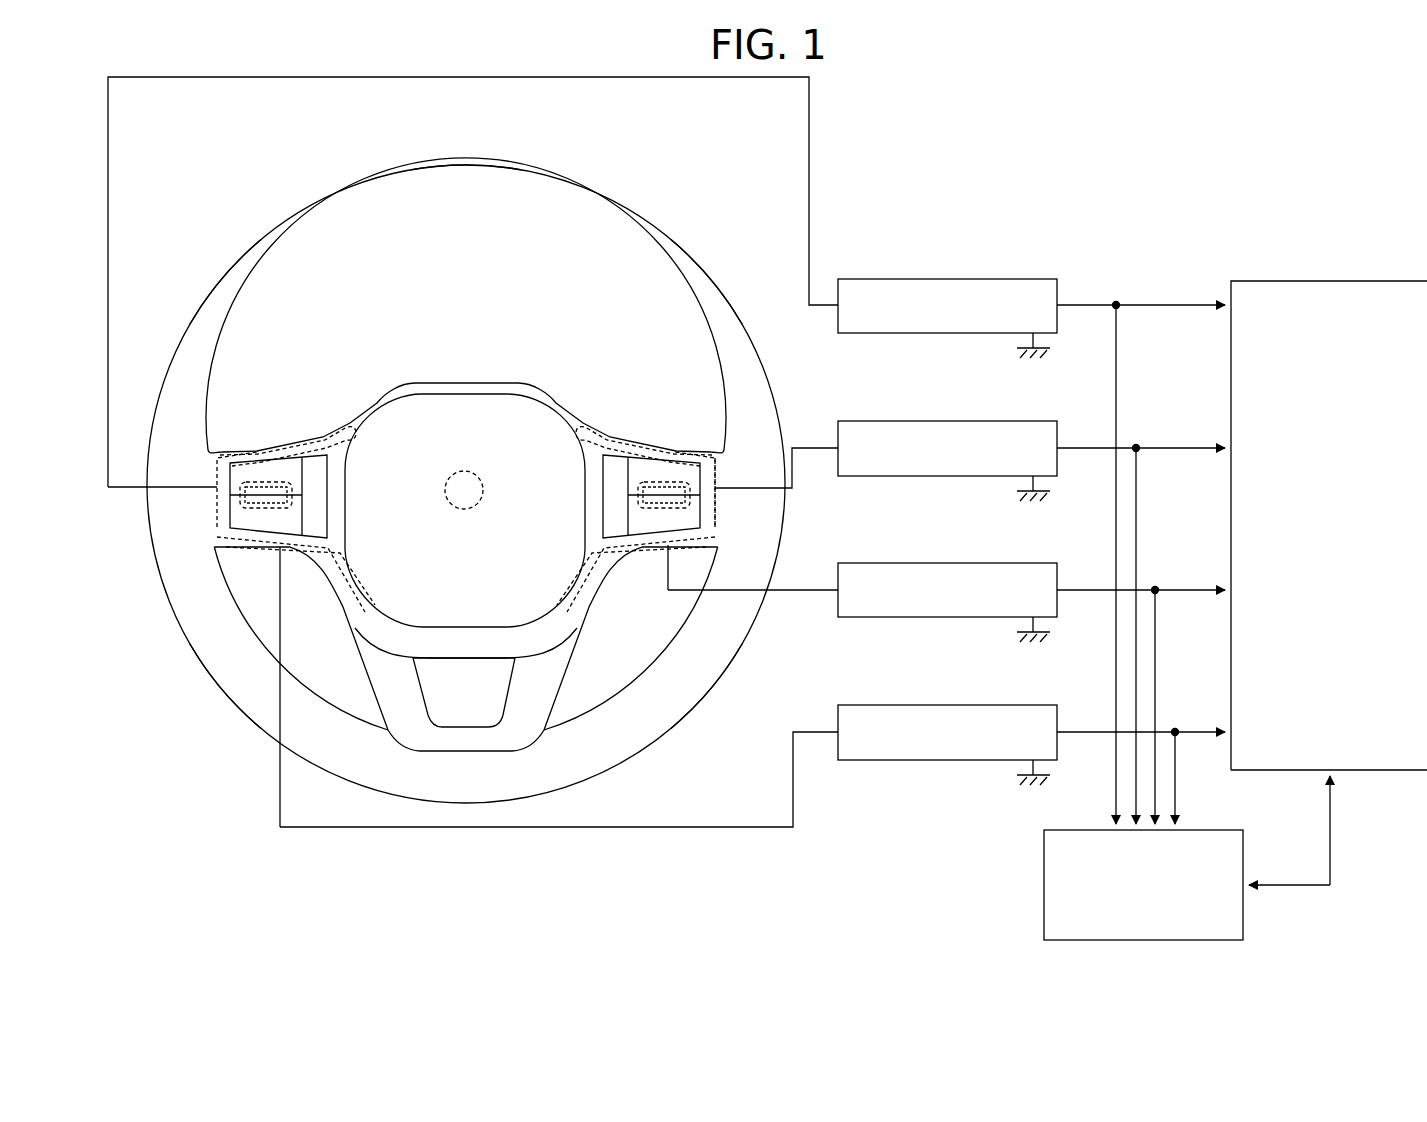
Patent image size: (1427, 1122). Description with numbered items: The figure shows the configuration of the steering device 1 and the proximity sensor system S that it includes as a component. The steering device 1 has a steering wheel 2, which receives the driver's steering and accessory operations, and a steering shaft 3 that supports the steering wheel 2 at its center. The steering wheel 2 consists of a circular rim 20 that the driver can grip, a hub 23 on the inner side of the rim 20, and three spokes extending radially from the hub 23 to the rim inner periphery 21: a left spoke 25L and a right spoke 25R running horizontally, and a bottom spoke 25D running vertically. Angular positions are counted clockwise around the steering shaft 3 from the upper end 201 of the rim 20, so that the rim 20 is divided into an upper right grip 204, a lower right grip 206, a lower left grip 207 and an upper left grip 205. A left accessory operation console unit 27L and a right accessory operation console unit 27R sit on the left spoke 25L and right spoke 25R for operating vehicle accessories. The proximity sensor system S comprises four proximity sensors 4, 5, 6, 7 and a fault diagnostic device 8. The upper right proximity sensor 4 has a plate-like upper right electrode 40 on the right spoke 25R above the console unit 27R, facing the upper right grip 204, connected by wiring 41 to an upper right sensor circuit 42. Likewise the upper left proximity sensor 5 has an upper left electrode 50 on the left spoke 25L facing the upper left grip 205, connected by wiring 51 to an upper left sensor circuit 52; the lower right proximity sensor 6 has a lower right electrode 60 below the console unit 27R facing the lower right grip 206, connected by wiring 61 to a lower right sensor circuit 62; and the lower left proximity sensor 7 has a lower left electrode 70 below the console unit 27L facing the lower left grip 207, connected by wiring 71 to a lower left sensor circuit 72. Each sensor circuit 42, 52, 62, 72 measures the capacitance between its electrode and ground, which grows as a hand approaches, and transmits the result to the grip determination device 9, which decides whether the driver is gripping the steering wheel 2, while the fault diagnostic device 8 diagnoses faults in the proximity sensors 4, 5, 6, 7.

The steering device 1 is at (1376, 120).
The proximity sensor system S is at (1227, 172).
The steering wheel 2 is at (588, 148).
The rim 20 is at (376, 181).
The upper end of the rim 201 is at (465, 169).
The upper right grip 204 is at (740, 283).
The upper left grip 205 is at (208, 300).
The lower right grip 206 is at (702, 708).
The lower left grip 207 is at (236, 718).
The rim inner periphery 21 is at (252, 352).
The hub 23 is at (404, 385).
The steering shaft 3 is at (463, 471).
The left spoke 25L is at (333, 437).
The right spoke 25R is at (604, 438).
The bottom spoke 25D is at (556, 654).
The left accessory operation console unit 27L is at (268, 460).
The right accessory operation console unit 27R is at (660, 460).
The upper right proximity sensor 4 is at (1074, 390).
The upper left proximity sensor 5 is at (1074, 250).
The lower right proximity sensor 6 is at (1074, 535).
The lower left proximity sensor 7 is at (1074, 675).
The upper right electrode 40 is at (718, 504).
The wiring 41 is at (806, 440).
The upper right sensor circuit 42 is at (955, 422).
The upper left electrode 50 is at (217, 507).
The wiring 51 is at (811, 183).
The upper left sensor circuit 52 is at (955, 280).
The lower right electrode 60 is at (640, 556).
The wiring 61 is at (808, 590).
The lower right sensor circuit 62 is at (955, 564).
The lower left electrode 70 is at (318, 562).
The wiring 71 is at (808, 732).
The lower left sensor circuit 72 is at (955, 706).
The fault diagnostic device 8 is at (1210, 830).
The grip determination device 9 is at (1372, 281).